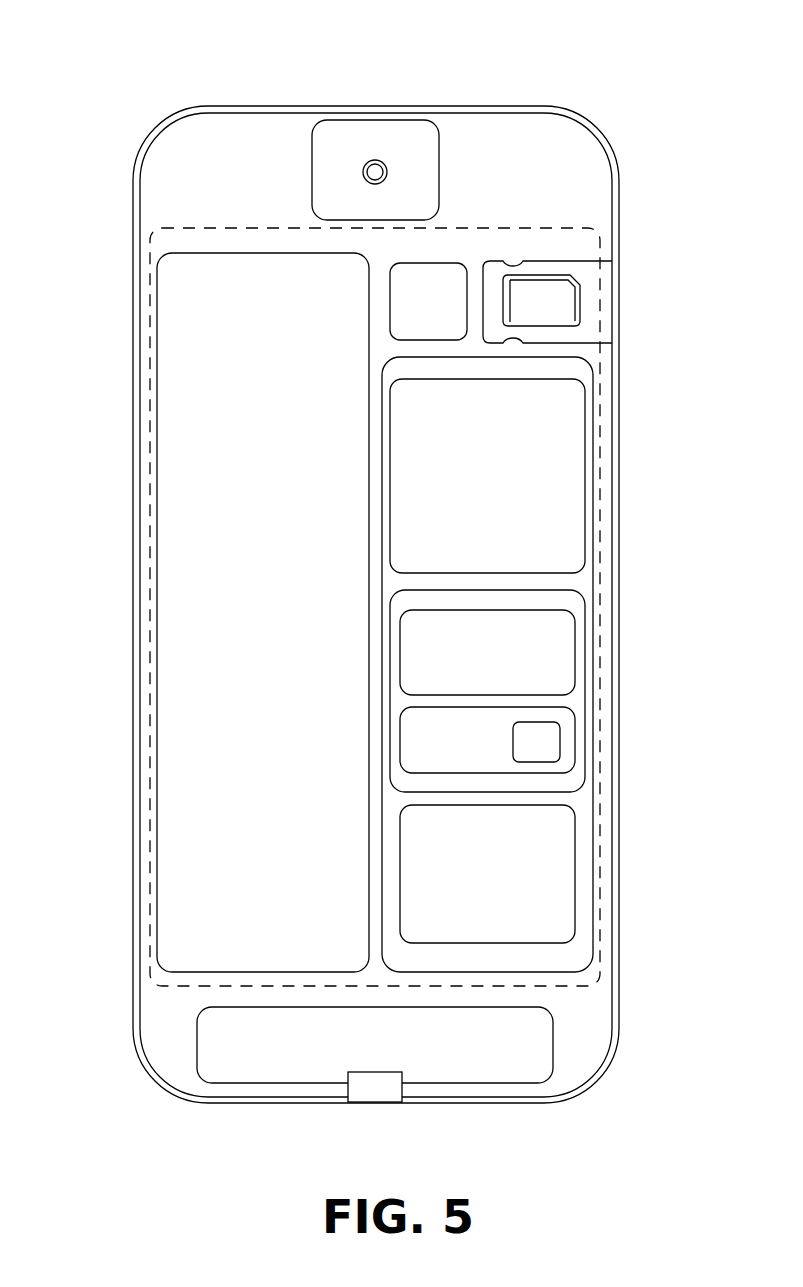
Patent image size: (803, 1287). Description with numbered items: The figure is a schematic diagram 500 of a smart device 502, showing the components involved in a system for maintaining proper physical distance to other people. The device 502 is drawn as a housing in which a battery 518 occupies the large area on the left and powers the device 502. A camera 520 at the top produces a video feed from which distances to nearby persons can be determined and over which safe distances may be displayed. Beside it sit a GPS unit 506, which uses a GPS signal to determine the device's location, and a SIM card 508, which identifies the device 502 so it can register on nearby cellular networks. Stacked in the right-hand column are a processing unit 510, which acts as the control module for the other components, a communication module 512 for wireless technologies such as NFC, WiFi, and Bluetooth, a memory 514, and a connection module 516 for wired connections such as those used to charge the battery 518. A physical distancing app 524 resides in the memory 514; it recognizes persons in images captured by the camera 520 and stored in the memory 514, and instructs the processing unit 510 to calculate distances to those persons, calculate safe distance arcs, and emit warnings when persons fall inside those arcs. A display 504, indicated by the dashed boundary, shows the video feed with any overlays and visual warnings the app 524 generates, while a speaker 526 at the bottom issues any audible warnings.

The schematic diagram 500 is at (103, 66).
The device 502 is at (138, 275).
The display 504 is at (150, 357).
The GPS unit 506 is at (445, 263).
The SIM card 508 is at (532, 261).
The processing unit 510 is at (466, 490).
The communication module 512 is at (466, 667).
The memory 514 is at (446, 755).
The connection module 516 is at (466, 888).
The battery 518 is at (243, 623).
The camera 520 is at (312, 167).
The physical distancing app 524 is at (560, 740).
The speaker 526 is at (372, 1103).